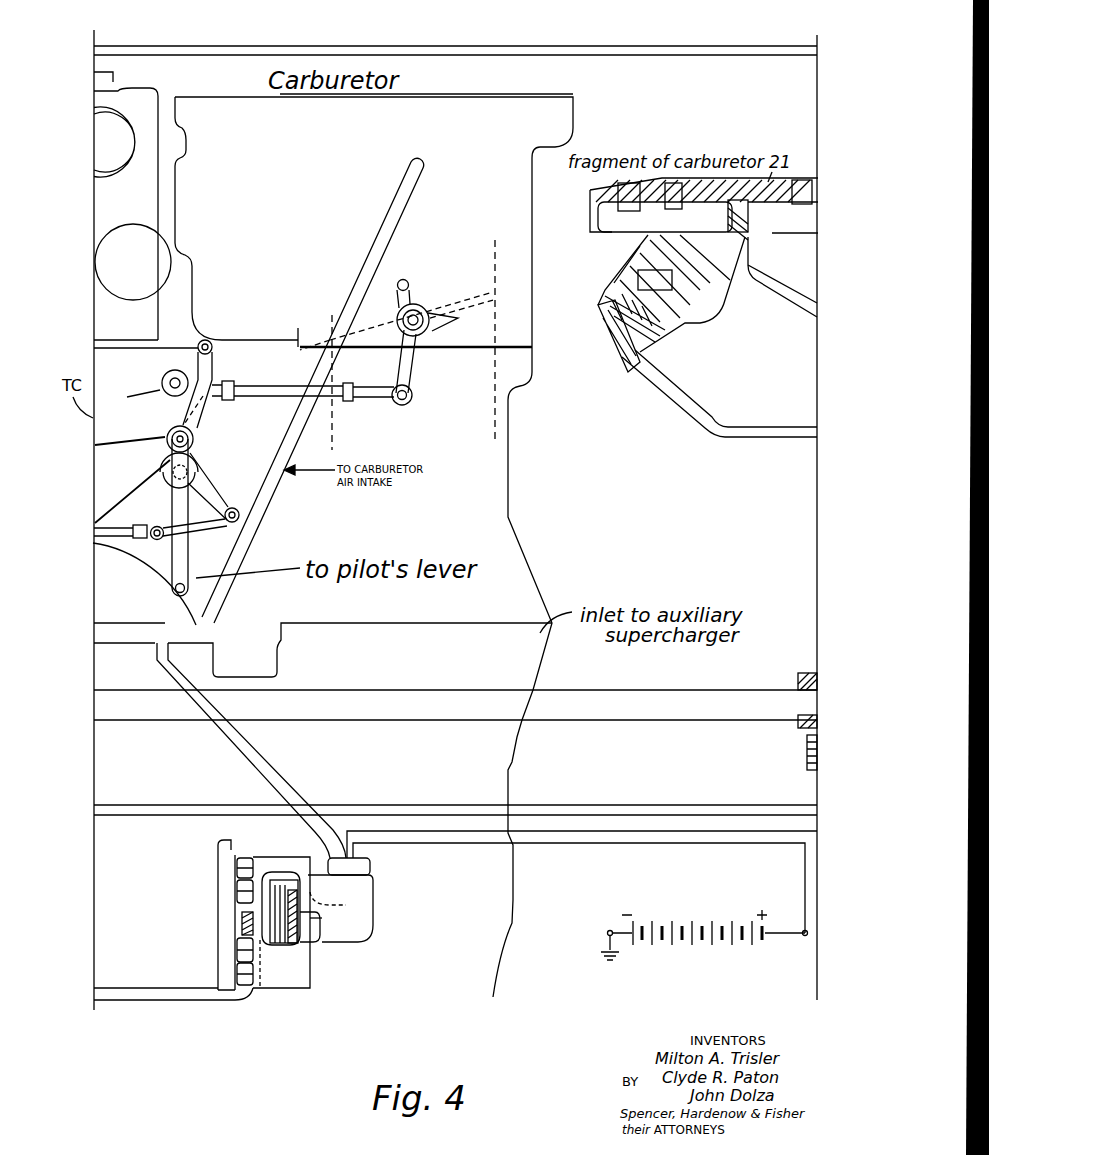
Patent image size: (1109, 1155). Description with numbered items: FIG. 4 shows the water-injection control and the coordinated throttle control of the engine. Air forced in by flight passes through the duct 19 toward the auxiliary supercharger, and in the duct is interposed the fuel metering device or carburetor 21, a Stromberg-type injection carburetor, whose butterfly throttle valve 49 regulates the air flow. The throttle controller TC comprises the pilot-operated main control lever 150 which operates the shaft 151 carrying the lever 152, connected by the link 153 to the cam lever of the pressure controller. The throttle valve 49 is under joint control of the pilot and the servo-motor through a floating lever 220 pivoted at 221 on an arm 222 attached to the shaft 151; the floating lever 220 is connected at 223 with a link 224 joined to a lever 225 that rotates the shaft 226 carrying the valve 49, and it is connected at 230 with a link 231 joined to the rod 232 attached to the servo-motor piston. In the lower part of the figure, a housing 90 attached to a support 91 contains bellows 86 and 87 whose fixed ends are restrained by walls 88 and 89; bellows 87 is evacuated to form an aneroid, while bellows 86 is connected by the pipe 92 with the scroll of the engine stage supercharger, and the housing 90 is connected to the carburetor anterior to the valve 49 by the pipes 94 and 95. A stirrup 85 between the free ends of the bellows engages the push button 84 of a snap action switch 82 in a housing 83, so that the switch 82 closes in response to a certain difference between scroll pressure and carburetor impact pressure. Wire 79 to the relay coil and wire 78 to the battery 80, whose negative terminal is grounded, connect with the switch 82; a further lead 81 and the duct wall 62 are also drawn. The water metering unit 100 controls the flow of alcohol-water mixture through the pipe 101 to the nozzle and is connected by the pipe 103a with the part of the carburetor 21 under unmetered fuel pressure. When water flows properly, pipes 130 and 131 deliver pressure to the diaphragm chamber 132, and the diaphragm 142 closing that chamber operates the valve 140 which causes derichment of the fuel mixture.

The pipe 131 is at (568, 43).
The fuel metering device 21 is at (507, 95).
The duct 19 is at (510, 467).
The link 153 is at (150, 348).
The lever 152 is at (214, 358).
The connection point 223 is at (162, 383).
The link 224 is at (282, 395).
The lever 225 is at (399, 362).
The shaft 226 is at (397, 334).
The butterfly type throttle valve 49 is at (463, 298).
The pipe 95 is at (271, 499).
The shaft 151 is at (196, 443).
The floating lever 220 is at (200, 466).
The pivot 221 is at (190, 483).
The connection point 230 is at (246, 504).
The arm 222 is at (160, 460).
The rod 232 is at (133, 526).
The link 231 is at (206, 528).
The main control lever 150 is at (172, 563).
The valve 140 is at (684, 322).
The diaphragm 142 is at (600, 322).
The diaphragm chamber 132 is at (600, 350).
The pipe 130 is at (771, 437).
The pipe 103a is at (805, 311).
The pipe 101 is at (733, 695).
The water metering unit 100 is at (805, 746).
The duct wall 62 is at (578, 807).
The wire 79 is at (661, 838).
The wire 81 is at (699, 844).
The battery 80 is at (714, 906).
The wire 78 is at (791, 940).
The pipe 94 is at (240, 742).
The housing 90 is at (258, 856).
The support 91 is at (216, 844).
The wall 88 is at (268, 906).
The bellows 86 is at (266, 912).
The wall 89 is at (300, 862).
The bellows 87 is at (280, 870).
The stirrup 85 is at (310, 917).
The push button 84 is at (313, 926).
The housing 83 is at (373, 886).
The snap action switch 82 is at (323, 918).
The pipe 92 is at (164, 994).